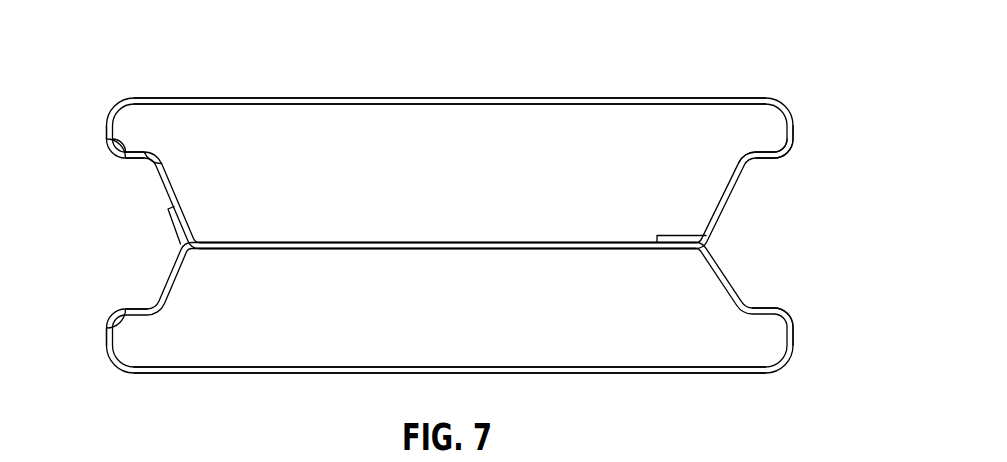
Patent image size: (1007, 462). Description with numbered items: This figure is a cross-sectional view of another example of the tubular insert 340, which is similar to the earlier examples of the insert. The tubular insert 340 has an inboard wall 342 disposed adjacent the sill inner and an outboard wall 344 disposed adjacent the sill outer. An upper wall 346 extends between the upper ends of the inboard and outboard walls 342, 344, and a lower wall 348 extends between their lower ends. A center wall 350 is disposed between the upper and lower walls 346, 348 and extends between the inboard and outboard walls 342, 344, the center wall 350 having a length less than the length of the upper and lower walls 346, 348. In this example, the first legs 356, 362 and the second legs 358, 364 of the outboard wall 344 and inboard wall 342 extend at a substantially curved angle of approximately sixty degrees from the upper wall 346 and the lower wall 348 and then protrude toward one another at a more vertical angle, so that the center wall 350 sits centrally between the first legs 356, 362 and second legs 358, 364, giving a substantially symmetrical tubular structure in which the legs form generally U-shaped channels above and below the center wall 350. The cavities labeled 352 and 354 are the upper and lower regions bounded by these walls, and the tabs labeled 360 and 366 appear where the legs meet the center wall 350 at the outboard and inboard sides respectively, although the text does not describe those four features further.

The tubular insert 340 is at (742, 76).
The inboard wall 342 is at (138, 158).
The outboard wall 344 is at (788, 150).
The upper wall 346 is at (474, 97).
The lower wall 348 is at (523, 375).
The center wall 350 is at (352, 250).
The first chamber 352 is at (455, 198).
The second chamber 354 is at (455, 326).
The first leg 356 is at (760, 161).
The second leg 358 is at (779, 316).
The right flange tab 360 is at (768, 254).
The first leg 362 is at (139, 164).
The second leg 364 is at (123, 314).
The left flange tab 366 is at (162, 254).